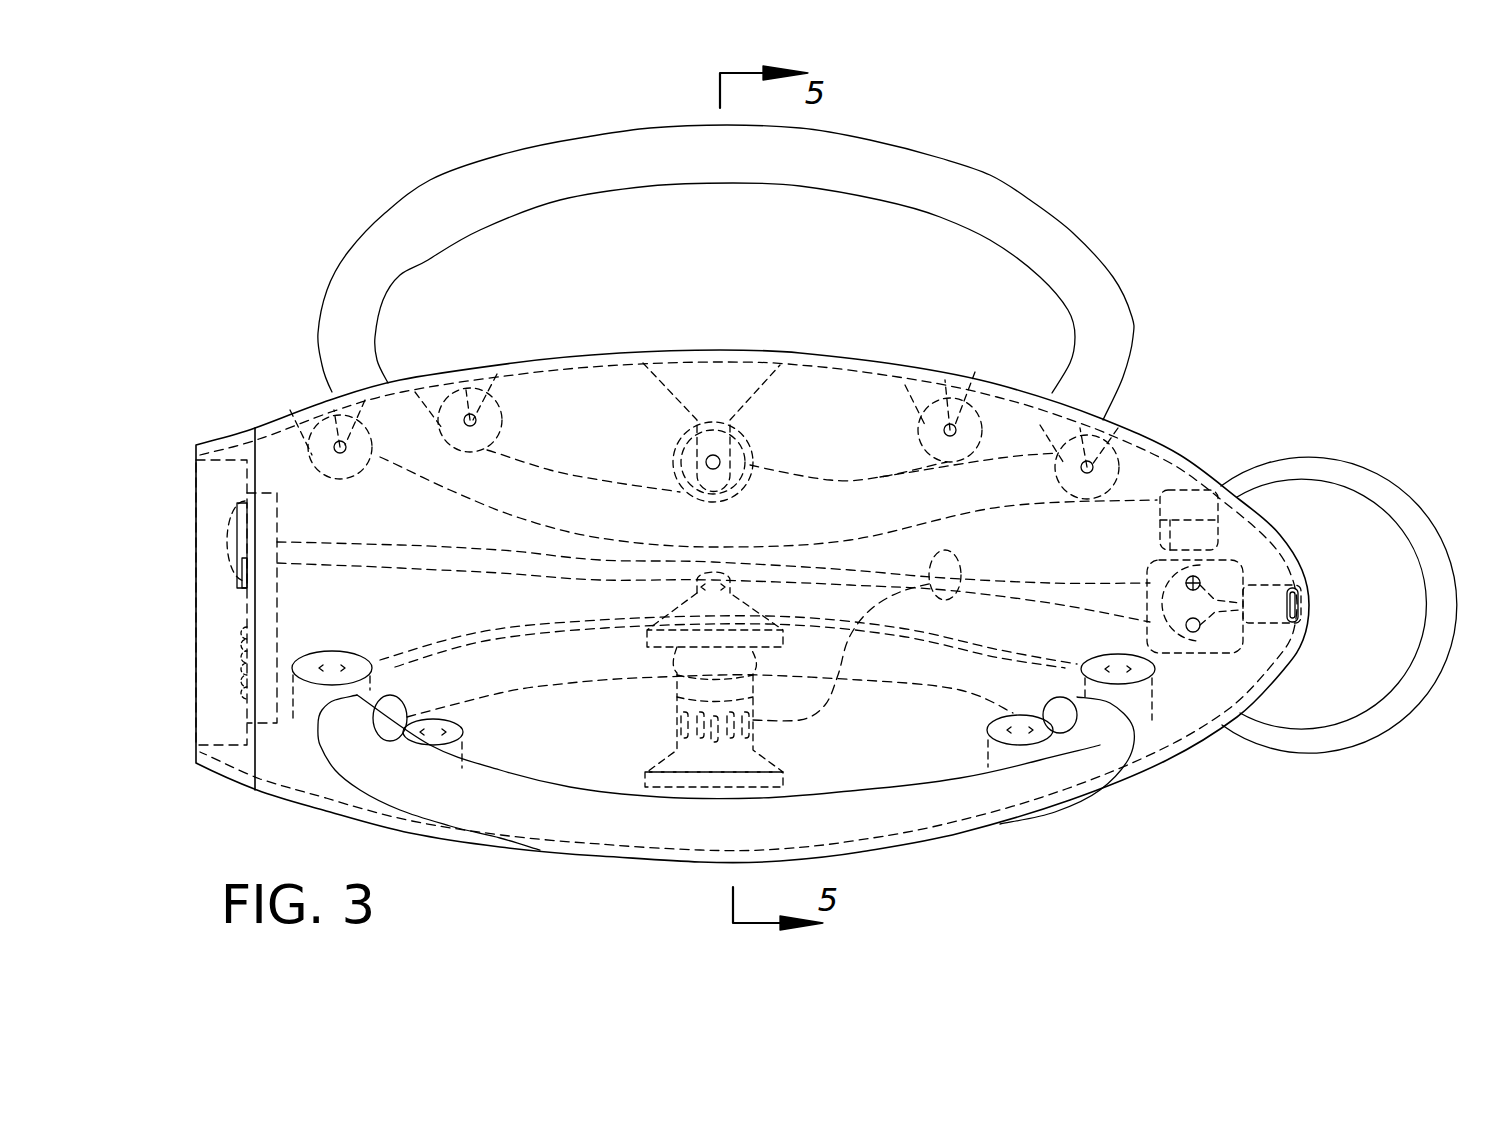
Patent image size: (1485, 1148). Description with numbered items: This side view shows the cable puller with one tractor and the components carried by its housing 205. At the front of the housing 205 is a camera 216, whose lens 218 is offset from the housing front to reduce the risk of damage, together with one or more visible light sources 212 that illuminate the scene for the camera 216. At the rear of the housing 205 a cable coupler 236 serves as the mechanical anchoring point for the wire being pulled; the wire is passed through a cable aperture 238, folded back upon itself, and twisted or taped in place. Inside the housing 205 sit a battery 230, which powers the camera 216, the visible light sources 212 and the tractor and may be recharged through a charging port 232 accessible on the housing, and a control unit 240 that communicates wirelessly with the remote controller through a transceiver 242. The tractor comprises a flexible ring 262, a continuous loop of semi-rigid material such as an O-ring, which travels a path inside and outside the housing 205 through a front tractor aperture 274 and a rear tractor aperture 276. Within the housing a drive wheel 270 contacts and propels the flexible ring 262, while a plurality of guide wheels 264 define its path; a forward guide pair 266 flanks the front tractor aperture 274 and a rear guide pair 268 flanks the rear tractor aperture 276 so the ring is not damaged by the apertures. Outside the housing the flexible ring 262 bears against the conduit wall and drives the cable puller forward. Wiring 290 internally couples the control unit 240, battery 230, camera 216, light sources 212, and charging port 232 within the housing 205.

The housing 205 is at (1170, 763).
The visible light sources 212 is at (242, 680).
The camera 216 is at (240, 505).
The lens 218 is at (230, 543).
The battery 230 is at (1213, 653).
The charging port 232 is at (1300, 603).
The cable coupler 236 is at (1295, 456).
The cable aperture 238 is at (1325, 685).
The control unit 240 is at (1180, 497).
The transceiver 242 is at (1208, 530).
The flexible ring 262 is at (976, 194).
The guide wheels 264 is at (367, 662).
The forward guide pair 266 is at (362, 428).
The rear guide pair 268 is at (1062, 440).
The drive wheel 270 is at (680, 458).
The front tractor aperture 274 is at (318, 742).
The rear tractor aperture 276 is at (1135, 740).
The wiring 290 is at (933, 597).